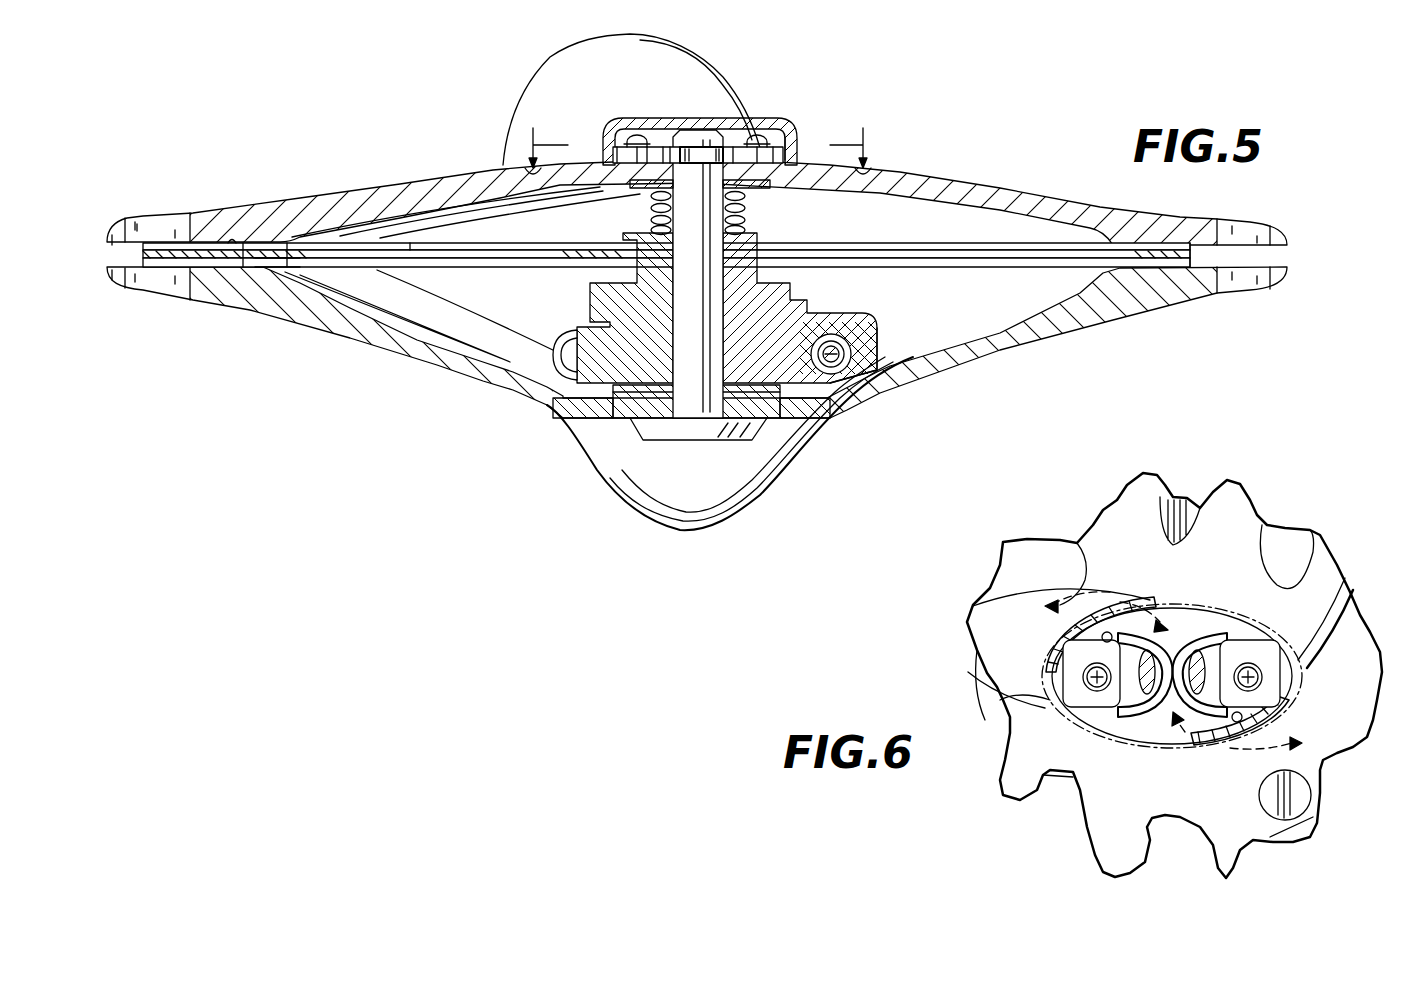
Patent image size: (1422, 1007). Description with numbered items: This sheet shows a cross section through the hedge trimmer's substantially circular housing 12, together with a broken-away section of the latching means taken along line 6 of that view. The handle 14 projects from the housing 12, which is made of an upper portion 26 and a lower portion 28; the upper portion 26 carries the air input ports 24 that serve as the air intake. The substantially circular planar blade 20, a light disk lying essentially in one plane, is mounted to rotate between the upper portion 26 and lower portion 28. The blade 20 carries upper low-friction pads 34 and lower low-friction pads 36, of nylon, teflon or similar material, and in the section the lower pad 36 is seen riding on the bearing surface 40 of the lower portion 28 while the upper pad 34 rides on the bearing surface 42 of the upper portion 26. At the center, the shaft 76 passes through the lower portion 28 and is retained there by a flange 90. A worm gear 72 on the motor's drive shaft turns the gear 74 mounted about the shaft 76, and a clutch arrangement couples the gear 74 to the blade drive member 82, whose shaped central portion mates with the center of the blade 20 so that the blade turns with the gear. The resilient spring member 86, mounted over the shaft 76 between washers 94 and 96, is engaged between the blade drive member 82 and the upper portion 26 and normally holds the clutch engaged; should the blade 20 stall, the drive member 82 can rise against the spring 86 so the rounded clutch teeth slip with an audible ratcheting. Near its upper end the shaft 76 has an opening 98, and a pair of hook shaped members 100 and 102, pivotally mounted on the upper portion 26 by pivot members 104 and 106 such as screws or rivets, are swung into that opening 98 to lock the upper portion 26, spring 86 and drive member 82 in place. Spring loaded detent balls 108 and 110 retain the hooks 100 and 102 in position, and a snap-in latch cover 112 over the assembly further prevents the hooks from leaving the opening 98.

In FIG. 5, the substantially circular housing 12 is at (178, 206).
In FIG. 5, the handle 14 is at (548, 78).
In FIG. 6, the substantially circular planar blade 20 is at (1000, 700).
In FIG. 6, the air input ports 24 is at (1025, 608).
In FIG. 5, the upper portion 26 is at (950, 180).
In FIG. 6, the upper portion 26 is at (977, 640).
In FIG. 5, the lower portion 28 is at (1000, 352).
In FIG. 5, the upper low-friction pads 34 is at (293, 240).
In FIG. 5, the lower low-friction pads 36 is at (263, 264).
In FIG. 5, the bearing surface 40 is at (210, 253).
In FIG. 5, the bearing surface 42 is at (232, 240).
In FIG. 5, the worm gear 72 is at (880, 393).
In FIG. 5, the gear 74 is at (520, 355).
In FIG. 5, the shaft 76 is at (838, 407).
In FIG. 5, the blade drive member 82 is at (790, 288).
In FIG. 5, the resilient spring member 86 is at (737, 193).
In FIG. 5, the flange 90 is at (710, 440).
In FIG. 5, the washer 94 is at (653, 188).
In FIG. 5, the washer 96 is at (758, 227).
In FIG. 6, the opening 98 is at (1167, 715).
In FIG. 5, the hook shaped member 100 is at (660, 165).
In FIG. 6, the hook shaped member 100 is at (1168, 650).
In FIG. 5, the hook shaped member 102 is at (716, 132).
In FIG. 6, the hook shaped member 102 is at (1140, 622).
In FIG. 5, the pivot member 104 is at (637, 135).
In FIG. 6, the pivot member 104 is at (1062, 685).
In FIG. 5, the pivot member 106 is at (773, 118).
In FIG. 6, the pivot member 106 is at (1325, 695).
In FIG. 6, the spring loaded detent ball 108 is at (1104, 632).
In FIG. 6, the spring loaded detent ball 110 is at (1242, 722).
In FIG. 5, the latch cover 112 is at (771, 120).
In FIG. 6, the latch cover 112 is at (1173, 740).
In FIG. 5, the line 6— 6 is at (698, 141).